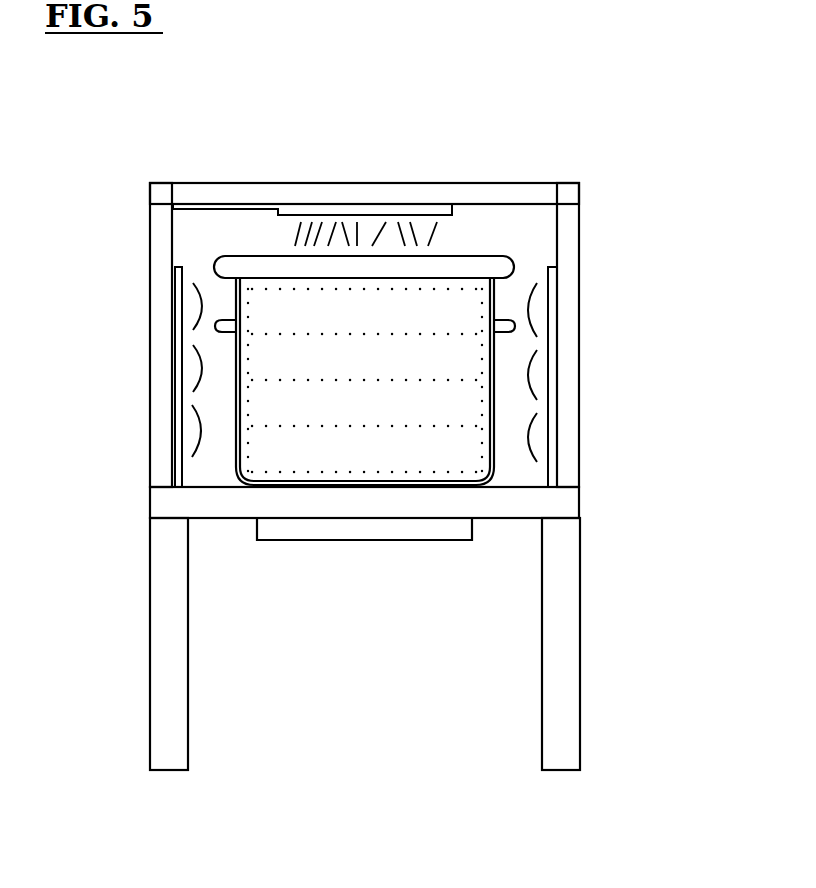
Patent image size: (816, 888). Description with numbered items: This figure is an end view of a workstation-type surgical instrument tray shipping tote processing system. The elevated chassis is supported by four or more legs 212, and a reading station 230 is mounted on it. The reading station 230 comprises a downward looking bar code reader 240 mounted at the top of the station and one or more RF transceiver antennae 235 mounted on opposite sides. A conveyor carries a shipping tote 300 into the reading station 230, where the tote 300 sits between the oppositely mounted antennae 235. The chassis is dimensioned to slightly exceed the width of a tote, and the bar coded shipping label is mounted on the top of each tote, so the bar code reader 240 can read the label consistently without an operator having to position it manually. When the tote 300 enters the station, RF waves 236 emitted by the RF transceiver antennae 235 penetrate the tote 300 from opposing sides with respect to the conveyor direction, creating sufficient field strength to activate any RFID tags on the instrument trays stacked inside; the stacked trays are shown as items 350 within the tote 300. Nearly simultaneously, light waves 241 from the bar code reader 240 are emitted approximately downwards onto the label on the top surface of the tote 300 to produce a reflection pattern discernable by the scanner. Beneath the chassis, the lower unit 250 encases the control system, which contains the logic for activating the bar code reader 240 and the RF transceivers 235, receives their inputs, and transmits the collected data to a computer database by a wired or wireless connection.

The reading station 230 is at (240, 183).
The legs 212 is at (580, 708).
The bar code reader 240 is at (278, 213).
The light waves 241 is at (347, 235).
The shipping tote 300 is at (502, 298).
The food layers 350 is at (339, 322).
The RF transceiver antennae 235 is at (182, 422).
The RF waves 236 is at (366, 377).
The lower unit 250 is at (300, 540).